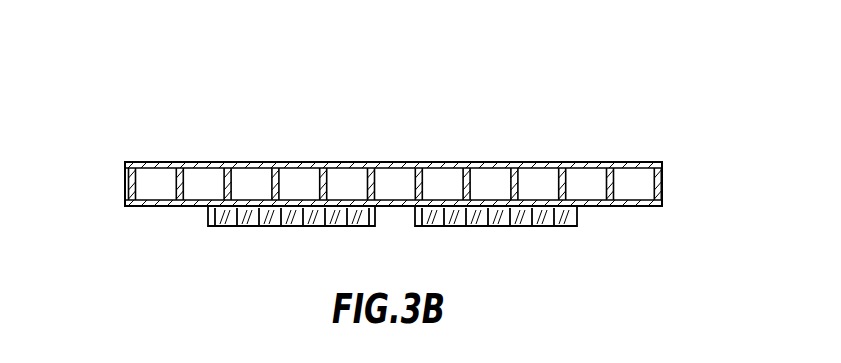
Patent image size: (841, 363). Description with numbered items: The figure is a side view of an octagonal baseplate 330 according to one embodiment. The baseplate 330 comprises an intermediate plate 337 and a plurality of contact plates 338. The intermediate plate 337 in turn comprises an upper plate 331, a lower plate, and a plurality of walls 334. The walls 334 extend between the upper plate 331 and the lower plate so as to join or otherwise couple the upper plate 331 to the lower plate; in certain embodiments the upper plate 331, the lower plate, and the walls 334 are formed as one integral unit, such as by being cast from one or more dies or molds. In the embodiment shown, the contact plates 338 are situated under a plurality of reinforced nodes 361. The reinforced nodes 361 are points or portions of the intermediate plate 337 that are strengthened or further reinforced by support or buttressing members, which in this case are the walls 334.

The baseplate 330 is at (150, 100).
The upper plate 331 is at (575, 162).
The walls 334 is at (175, 187).
The intermediate plate 337 is at (665, 178).
The contact plates 338 is at (243, 227).
The reinforced nodes 361 is at (367, 190).